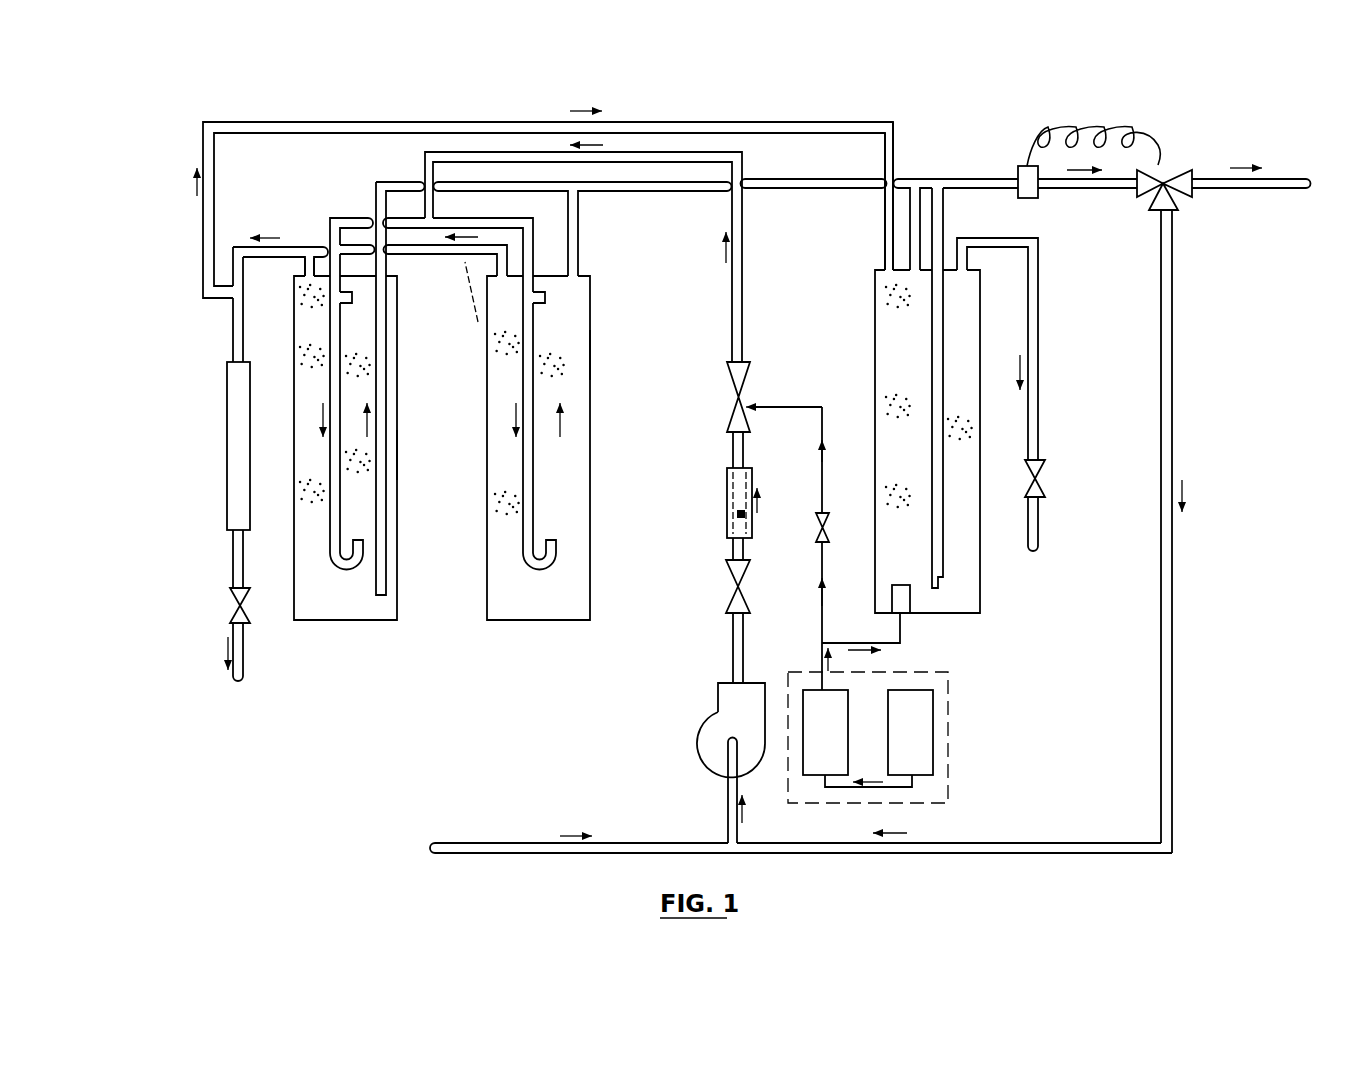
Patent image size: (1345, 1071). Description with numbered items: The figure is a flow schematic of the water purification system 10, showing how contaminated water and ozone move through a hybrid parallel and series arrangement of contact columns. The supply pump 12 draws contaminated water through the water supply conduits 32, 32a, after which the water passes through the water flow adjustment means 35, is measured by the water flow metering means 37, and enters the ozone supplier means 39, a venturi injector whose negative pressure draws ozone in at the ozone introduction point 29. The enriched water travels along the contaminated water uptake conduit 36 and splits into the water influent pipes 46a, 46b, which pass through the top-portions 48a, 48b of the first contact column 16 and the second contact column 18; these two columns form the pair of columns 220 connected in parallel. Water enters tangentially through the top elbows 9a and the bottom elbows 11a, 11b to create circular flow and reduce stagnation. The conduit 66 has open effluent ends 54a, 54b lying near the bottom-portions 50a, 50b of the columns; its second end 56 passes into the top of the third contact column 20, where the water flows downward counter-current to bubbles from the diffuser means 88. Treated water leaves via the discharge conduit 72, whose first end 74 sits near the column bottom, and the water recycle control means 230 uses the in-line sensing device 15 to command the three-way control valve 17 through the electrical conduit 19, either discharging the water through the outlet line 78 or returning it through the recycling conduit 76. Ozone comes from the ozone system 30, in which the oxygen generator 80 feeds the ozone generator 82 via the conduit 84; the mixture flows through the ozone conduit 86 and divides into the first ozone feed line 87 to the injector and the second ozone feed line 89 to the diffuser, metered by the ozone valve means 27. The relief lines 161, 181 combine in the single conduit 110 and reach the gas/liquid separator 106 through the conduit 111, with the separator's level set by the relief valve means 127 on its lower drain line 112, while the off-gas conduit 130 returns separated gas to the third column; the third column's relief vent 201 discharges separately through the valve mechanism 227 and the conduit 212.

The water purification system 10 is at (786, 88).
The off-gas conduit 130 is at (328, 122).
The single conduit 110 is at (235, 243).
The relief line 181 is at (304, 275).
The conduit 111 is at (232, 320).
The gas/liquid separator 106 is at (226, 447).
The drain conduit 112 is at (232, 558).
The relief valve means 127 is at (228, 607).
The bottom-portion 50b is at (387, 615).
The second contact column 18 is at (399, 452).
The bottom elbow 11b is at (363, 550).
The top elbow 9a is at (350, 302).
The water influent pipe 46b is at (328, 224).
The top-portion 48b is at (390, 259).
The effluent end 54b is at (376, 183).
The contaminated water uptake conduit 36 is at (745, 170).
The water influent pipe 46a is at (533, 242).
The top-portion 48a is at (517, 278).
The relief line 161 is at (466, 325).
The effluent end 54a is at (578, 247).
The bottom-portion 50a is at (582, 608).
The first contact column 16 is at (592, 355).
The bottom elbow 11a is at (497, 535).
The ozone supplier means 39 is at (727, 363).
The ozone introduction point 29 is at (746, 405).
The water flow metering means 37 is at (727, 470).
The water flow adjustment means 35 is at (730, 560).
The ozone valve means 27 is at (817, 514).
The first ozone feed line 87 is at (823, 636).
The second ozone feed line 89 is at (903, 635).
The ozone conduit 86 is at (824, 661).
The water supply conduit 32a is at (733, 666).
The supply pump 12 is at (697, 745).
The ozone generator 82 is at (815, 777).
The water supply conduit 32 is at (485, 843).
The ozone system 30 is at (952, 750).
The oxygen generator 80 is at (927, 776).
The conduit 84 is at (893, 788).
The pair of columns 220 is at (409, 667).
The conduit 66 is at (862, 188).
The second end 56 is at (912, 238).
The discharge conduit 72 is at (918, 178).
The in-line sensing device 15 is at (1028, 165).
The water recycle control means 230 is at (1099, 100).
The electrical conduit 19 is at (1162, 162).
The three-way control valve 17 is at (1193, 196).
The outlet conduit 78 is at (1285, 170).
The recycling conduit 76 is at (1174, 368).
The third contact column 20 is at (875, 332).
The first end 74 is at (945, 545).
The diffuser means 88 is at (912, 607).
The relief vent 201 is at (1040, 263).
The conduit 212 is at (1040, 377).
The valve mechanism 227 is at (1045, 498).